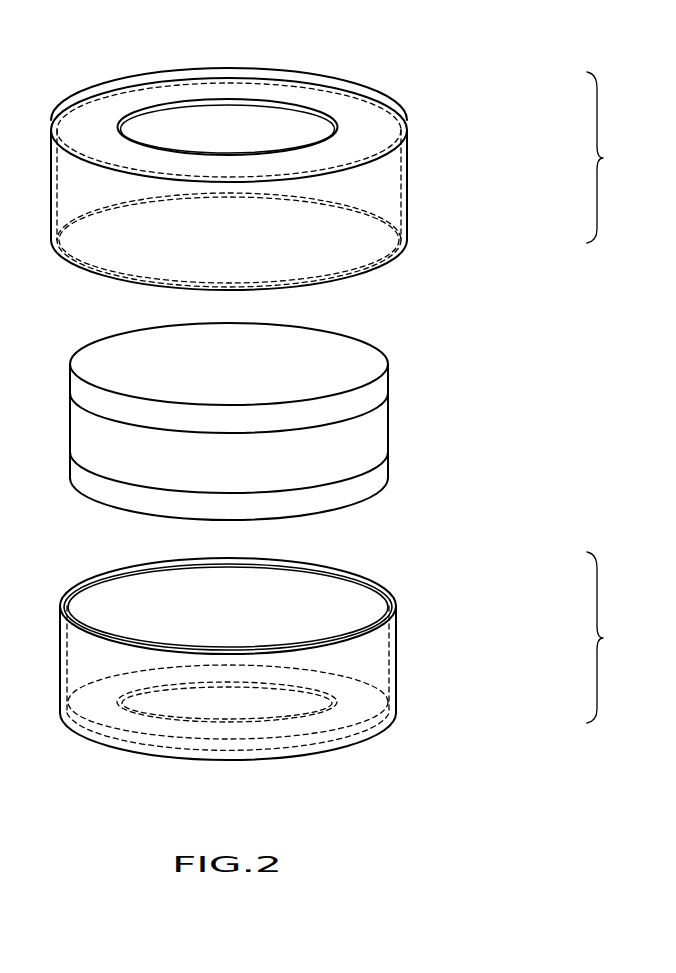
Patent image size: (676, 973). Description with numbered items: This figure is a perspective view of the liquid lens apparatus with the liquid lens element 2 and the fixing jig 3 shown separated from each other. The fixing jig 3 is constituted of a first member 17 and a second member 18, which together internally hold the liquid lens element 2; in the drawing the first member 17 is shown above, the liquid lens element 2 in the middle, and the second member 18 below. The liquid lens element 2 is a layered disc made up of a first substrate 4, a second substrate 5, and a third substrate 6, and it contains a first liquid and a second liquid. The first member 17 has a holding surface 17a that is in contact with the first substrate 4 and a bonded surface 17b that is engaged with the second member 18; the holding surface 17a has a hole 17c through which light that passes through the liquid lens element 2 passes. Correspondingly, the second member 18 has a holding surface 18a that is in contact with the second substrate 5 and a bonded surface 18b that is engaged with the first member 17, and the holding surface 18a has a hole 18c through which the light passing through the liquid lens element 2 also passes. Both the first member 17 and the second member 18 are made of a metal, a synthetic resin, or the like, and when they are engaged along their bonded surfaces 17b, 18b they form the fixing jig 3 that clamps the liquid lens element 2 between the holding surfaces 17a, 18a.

The liquid lens element 2 is at (431, 327).
The fixing jig 3 is at (605, 397).
The first substrate 4 is at (378, 385).
The second substrate 5 is at (378, 478).
The third substrate 6 is at (378, 432).
The first member 17 is at (433, 83).
The holding surface 17a is at (354, 113).
The bonded surface 17b is at (386, 197).
The hole 17c is at (126, 120).
The second member 18 is at (433, 585).
The holding surface 18a is at (353, 715).
The bonded surface 18b is at (372, 670).
The hole 18c is at (147, 720).